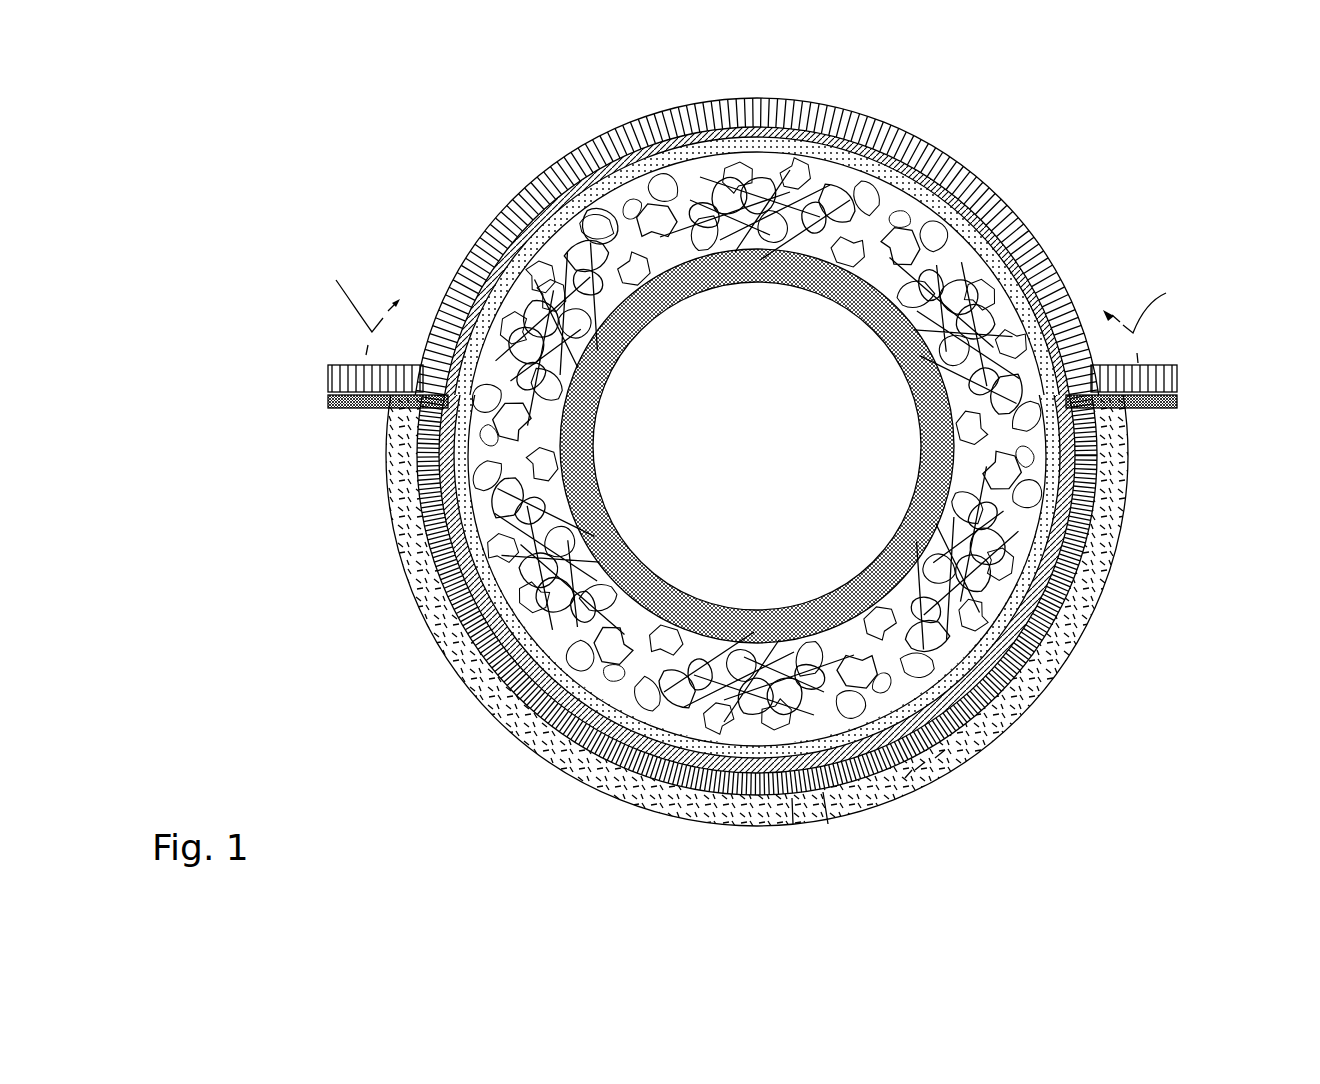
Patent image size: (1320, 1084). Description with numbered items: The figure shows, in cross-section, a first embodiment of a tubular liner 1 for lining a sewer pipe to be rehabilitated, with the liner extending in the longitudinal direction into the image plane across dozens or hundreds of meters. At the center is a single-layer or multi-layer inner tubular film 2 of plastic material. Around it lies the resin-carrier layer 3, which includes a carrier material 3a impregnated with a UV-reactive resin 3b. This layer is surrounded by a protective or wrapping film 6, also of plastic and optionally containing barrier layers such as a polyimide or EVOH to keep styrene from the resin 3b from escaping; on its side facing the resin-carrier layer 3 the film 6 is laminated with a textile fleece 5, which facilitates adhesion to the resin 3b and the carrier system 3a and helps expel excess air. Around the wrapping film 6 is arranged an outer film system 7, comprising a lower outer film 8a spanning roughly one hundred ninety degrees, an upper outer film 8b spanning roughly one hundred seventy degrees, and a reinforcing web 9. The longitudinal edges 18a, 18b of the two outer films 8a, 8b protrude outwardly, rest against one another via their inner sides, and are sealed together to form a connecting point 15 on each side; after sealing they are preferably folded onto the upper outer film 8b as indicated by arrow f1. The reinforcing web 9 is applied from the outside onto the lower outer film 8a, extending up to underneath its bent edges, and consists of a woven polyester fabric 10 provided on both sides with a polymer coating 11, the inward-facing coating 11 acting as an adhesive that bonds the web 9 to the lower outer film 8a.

The tubular liner 1 is at (282, 211).
The inner tubular film 2 is at (688, 628).
The resin-carrier layer 3 is at (925, 252).
The carrier material 3a is at (600, 228).
The UV-reactive resin 3b is at (556, 300).
The fleece 5 is at (484, 694).
The protective or wrapping film 6 is at (447, 593).
The outer film system 7 is at (1126, 238).
The lower outer film 8a is at (1110, 537).
The upper outer film 8b is at (490, 218).
The reinforcing web 9 is at (552, 766).
The fabric 10 is at (926, 770).
The polymer coating 11 is at (827, 822).
The connecting point 15 is at (330, 389).
The longitudinal edge of the lower outer film 18a is at (328, 398).
The longitudinal edge of the upper outer film 18b is at (325, 368).
The arrow f1 is at (750, 310).